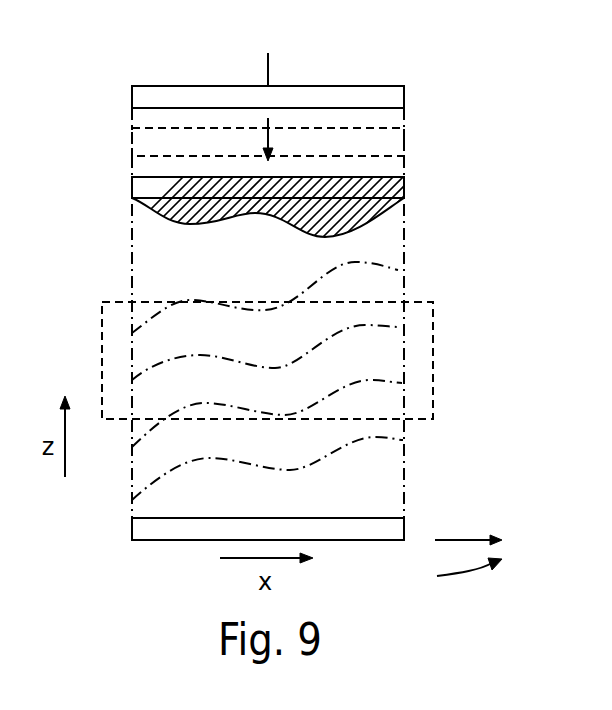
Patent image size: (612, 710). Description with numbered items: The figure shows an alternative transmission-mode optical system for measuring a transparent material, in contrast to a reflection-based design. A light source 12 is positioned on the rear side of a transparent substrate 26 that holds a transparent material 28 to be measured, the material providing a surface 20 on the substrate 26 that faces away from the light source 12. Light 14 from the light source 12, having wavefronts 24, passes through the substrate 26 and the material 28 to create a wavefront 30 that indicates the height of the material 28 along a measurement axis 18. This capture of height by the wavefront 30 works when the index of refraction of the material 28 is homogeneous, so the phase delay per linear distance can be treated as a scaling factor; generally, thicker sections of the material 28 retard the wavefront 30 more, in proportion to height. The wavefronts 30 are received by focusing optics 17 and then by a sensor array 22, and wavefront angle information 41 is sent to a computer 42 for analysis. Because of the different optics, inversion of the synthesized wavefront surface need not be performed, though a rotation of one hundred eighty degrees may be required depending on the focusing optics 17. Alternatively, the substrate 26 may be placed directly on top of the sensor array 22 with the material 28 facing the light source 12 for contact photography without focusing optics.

The light source 12 is at (404, 94).
The measurement axis 18 is at (270, 66).
The wavefronts 24 is at (152, 133).
The light 14 is at (290, 143).
The transparent substrate 26 is at (138, 189).
The transparent material 28 is at (148, 204).
The surface 20 is at (385, 213).
The wavefront 30 is at (396, 268).
The focusing optics 17 is at (433, 363).
The sensor array 22 is at (165, 540).
The wavefront angle information 41 is at (460, 540).
The computer 42 is at (455, 576).